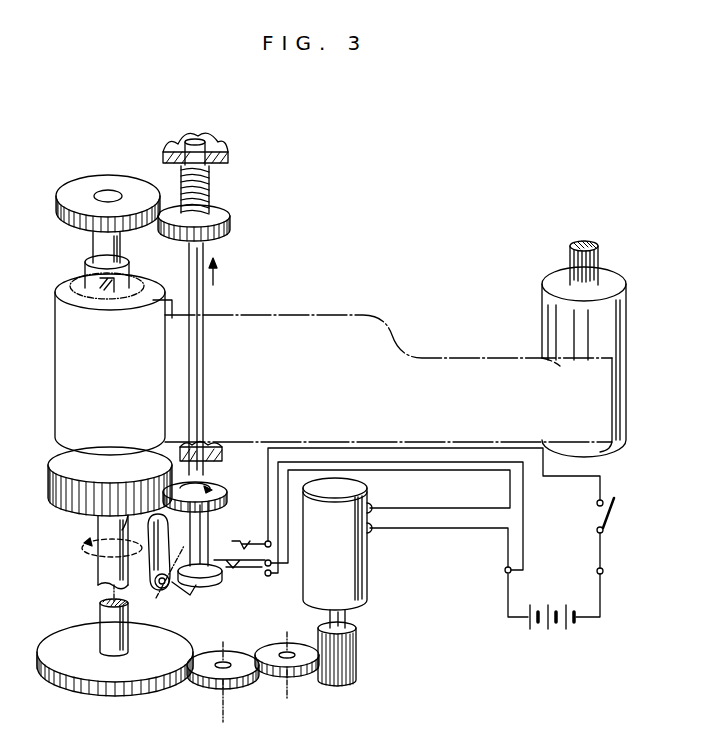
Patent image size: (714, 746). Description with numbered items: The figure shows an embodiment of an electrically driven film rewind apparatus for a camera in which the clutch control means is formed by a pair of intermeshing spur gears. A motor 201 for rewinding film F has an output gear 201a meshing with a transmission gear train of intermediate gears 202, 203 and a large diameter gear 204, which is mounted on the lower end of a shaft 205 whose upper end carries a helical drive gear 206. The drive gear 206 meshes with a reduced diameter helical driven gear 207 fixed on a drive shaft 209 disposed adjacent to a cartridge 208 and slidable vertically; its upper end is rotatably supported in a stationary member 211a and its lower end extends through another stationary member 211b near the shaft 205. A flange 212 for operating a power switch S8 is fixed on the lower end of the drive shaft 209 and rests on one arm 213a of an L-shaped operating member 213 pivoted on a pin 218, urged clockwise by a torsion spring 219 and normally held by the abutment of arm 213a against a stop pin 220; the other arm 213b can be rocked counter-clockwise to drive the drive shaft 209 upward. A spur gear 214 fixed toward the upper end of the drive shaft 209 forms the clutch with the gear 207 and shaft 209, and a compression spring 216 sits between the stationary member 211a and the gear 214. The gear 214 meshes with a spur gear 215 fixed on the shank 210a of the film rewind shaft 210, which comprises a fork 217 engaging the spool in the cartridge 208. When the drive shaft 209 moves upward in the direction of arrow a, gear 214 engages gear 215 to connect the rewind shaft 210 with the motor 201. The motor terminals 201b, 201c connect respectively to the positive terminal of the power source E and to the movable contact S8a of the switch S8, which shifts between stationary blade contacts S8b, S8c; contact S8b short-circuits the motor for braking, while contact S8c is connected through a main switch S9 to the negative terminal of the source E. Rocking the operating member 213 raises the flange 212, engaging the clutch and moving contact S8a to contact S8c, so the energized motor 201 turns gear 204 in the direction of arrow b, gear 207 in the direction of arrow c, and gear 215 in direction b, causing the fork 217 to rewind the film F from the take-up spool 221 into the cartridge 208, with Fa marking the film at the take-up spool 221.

The motor 201 is at (362, 580).
The output gear 201a is at (352, 676).
The power supply terminal 201b is at (372, 530).
The power supply terminal 201c is at (372, 505).
The intermediate gear 202 is at (300, 672).
The intermediate gear 203 is at (236, 684).
The large diameter gear 204 is at (140, 676).
The shaft 205 is at (100, 610).
The drive gear 206 is at (62, 463).
The driven gear 207 is at (215, 485).
The cartridge 208 is at (60, 384).
The drive shaft 209 is at (203, 372).
The film rewind shaft 210 is at (88, 235).
The shank 210a is at (95, 247).
The stationary member 211a is at (222, 152).
The stationary member 211b is at (210, 447).
The flange 212 is at (205, 582).
The operating member 213 is at (98, 526).
The arm 213a is at (222, 578).
The arm 213b is at (136, 492).
The spur gear 214 is at (224, 218).
The spur gear 215 is at (80, 180).
The compression spring 216 is at (207, 187).
The fork 217 is at (88, 284).
The pin 218 is at (152, 590).
The torsion spring 219 is at (170, 592).
The stop pin 220 is at (194, 598).
The take-up spool 221 is at (546, 282).
The film F is at (283, 318).
The film leader Fa is at (612, 392).
The power switch S8 is at (258, 540).
The movable contact S8a is at (270, 584).
The stationary blade contact S8b is at (245, 580).
The stationary blade contact S8c is at (243, 532).
The main switch S9 is at (610, 510).
The power source E is at (550, 628).
The arrow a is at (216, 278).
The arrow b is at (86, 560).
The arrow c is at (194, 493).